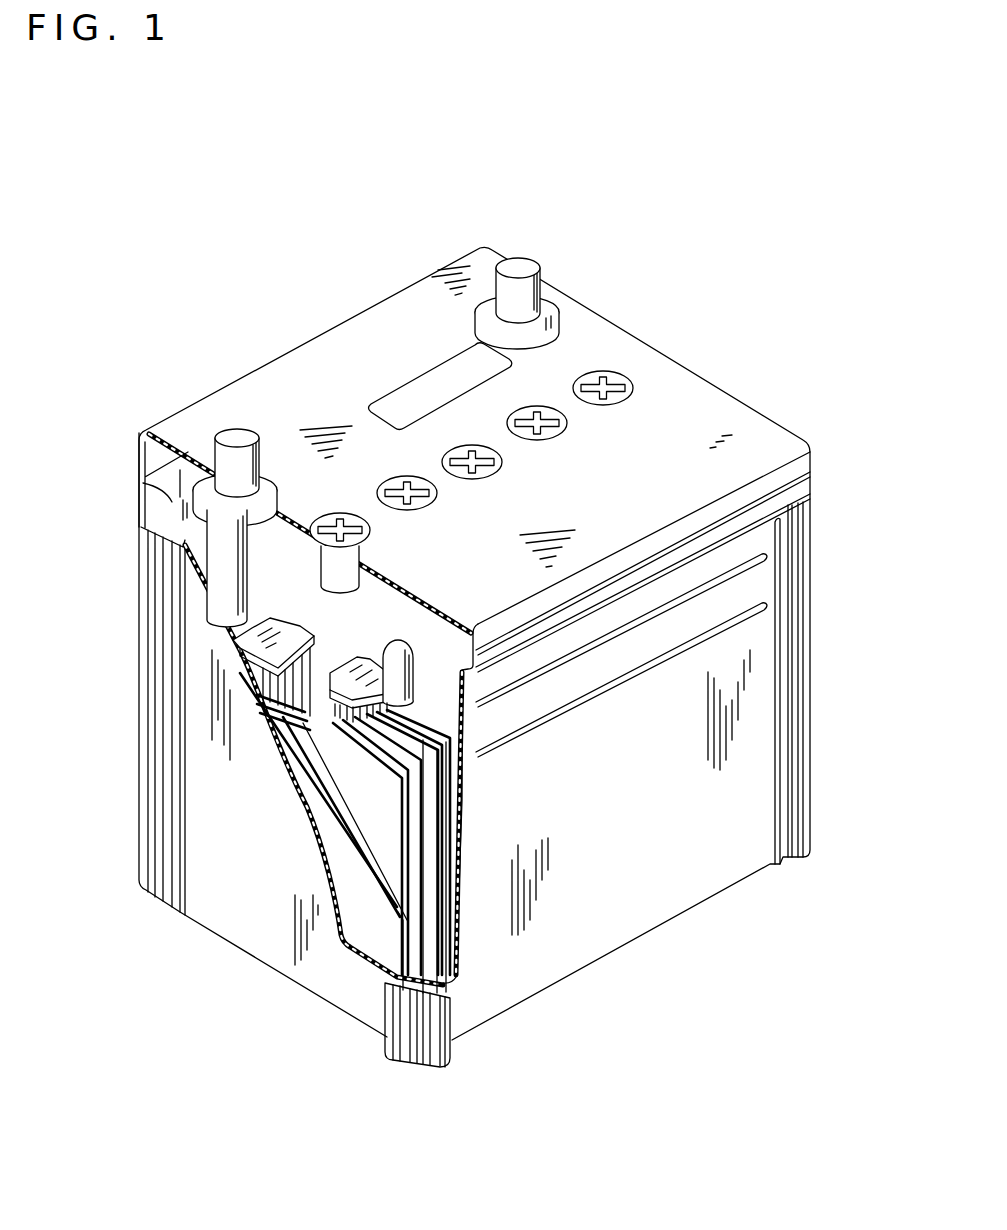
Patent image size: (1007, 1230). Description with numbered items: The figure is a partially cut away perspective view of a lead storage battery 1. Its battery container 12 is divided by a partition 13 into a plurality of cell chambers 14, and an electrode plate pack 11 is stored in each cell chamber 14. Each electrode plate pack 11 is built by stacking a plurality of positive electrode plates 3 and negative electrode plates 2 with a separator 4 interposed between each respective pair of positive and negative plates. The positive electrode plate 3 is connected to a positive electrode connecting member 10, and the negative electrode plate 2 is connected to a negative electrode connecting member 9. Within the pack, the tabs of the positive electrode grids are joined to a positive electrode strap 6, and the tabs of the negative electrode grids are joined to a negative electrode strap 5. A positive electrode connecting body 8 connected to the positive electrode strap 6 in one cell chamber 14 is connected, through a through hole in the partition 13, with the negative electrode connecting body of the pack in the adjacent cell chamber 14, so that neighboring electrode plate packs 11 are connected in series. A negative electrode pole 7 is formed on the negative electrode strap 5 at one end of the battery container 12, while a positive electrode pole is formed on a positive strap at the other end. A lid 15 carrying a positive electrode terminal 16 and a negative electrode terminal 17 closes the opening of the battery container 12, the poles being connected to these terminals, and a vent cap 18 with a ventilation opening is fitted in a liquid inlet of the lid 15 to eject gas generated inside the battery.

The lead storage battery 1 is at (373, 262).
The negative electrode plate 2 is at (357, 873).
The positive electrode plate 3 is at (377, 830).
The separator 4 is at (397, 957).
The negative electrode strap 5 is at (240, 642).
The positive electrode strap 6 is at (358, 662).
The negative electrode pole 7 is at (233, 577).
The positive electrode connecting body 8 is at (400, 660).
The negative electrode connecting member 9 is at (176, 593).
The positive electrode connecting member 10 is at (412, 616).
The electrode plate pack 11 is at (253, 1040).
The battery container 12 is at (202, 912).
The partition 13 is at (392, 607).
The cell chamber 14 is at (141, 480).
The lid 15 is at (712, 404).
The positive electrode terminal 16 is at (518, 263).
The negative electrode terminal 17 is at (237, 437).
The vent cap 18 is at (338, 528).